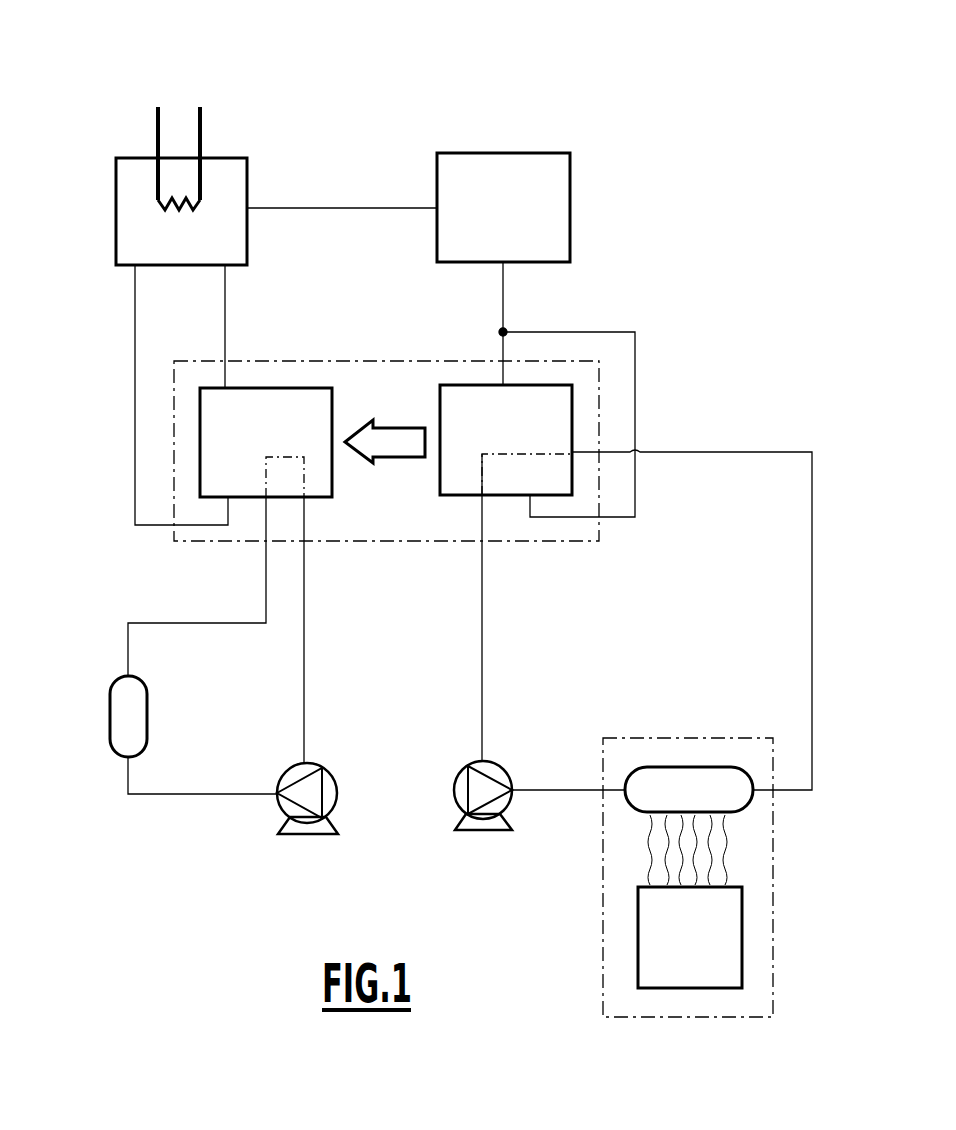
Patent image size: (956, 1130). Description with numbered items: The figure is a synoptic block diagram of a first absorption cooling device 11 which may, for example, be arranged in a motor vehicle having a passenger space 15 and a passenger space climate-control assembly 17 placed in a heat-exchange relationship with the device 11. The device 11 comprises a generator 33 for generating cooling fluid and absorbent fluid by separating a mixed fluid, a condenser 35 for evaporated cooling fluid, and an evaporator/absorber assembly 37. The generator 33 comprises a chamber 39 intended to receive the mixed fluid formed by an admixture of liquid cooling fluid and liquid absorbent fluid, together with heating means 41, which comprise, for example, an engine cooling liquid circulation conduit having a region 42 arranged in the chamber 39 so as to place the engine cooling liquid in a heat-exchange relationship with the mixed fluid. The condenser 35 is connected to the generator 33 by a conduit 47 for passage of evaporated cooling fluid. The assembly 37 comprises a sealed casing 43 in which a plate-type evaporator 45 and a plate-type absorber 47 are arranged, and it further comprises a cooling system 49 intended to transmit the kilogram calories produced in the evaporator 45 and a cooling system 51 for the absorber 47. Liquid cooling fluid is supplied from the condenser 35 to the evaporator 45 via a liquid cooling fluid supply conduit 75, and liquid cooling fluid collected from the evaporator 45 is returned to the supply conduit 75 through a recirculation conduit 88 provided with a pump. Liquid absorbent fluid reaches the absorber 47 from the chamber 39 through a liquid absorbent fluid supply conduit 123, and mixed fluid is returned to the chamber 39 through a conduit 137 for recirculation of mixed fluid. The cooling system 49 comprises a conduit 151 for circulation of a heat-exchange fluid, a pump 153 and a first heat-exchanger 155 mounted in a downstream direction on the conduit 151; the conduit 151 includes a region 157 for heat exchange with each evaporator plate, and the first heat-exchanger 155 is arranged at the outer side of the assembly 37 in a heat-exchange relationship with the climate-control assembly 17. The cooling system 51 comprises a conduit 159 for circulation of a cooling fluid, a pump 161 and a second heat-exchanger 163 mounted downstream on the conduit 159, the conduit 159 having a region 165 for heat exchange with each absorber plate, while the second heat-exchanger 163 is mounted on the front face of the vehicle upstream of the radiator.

The absorption cooling device 11 is at (305, 92).
The generator 33 is at (114, 198).
The chamber 39 is at (247, 170).
The heating means 41 is at (202, 124).
The region 42 is at (184, 208).
The condenser 35 is at (575, 192).
The conduit 47 is at (357, 208).
The liquid cooling fluid supply conduit 75 is at (503, 297).
The recirculation conduit 88 is at (602, 330).
The liquid absorbent fluid supply conduit 123 is at (228, 302).
The conduit for recirculation of mixed fluid 137 is at (137, 362).
The evaporator/absorber assembly 37 is at (608, 378).
The sealed casing 43 is at (577, 543).
The plate-type evaporator 45 is at (572, 427).
The region 165 is at (285, 457).
The region 157 is at (482, 455).
The cooling system 49 is at (822, 583).
The second heat-exchanger 163 is at (122, 715).
The cooling system 51 is at (170, 805).
The conduit 159 is at (304, 653).
The pump 161 is at (310, 832).
The conduit 151 is at (482, 653).
The pump 153 is at (484, 832).
The passenger space 15 is at (790, 905).
The first heat-exchanger 155 is at (678, 782).
The passenger space climate-control assembly 17 is at (679, 951).